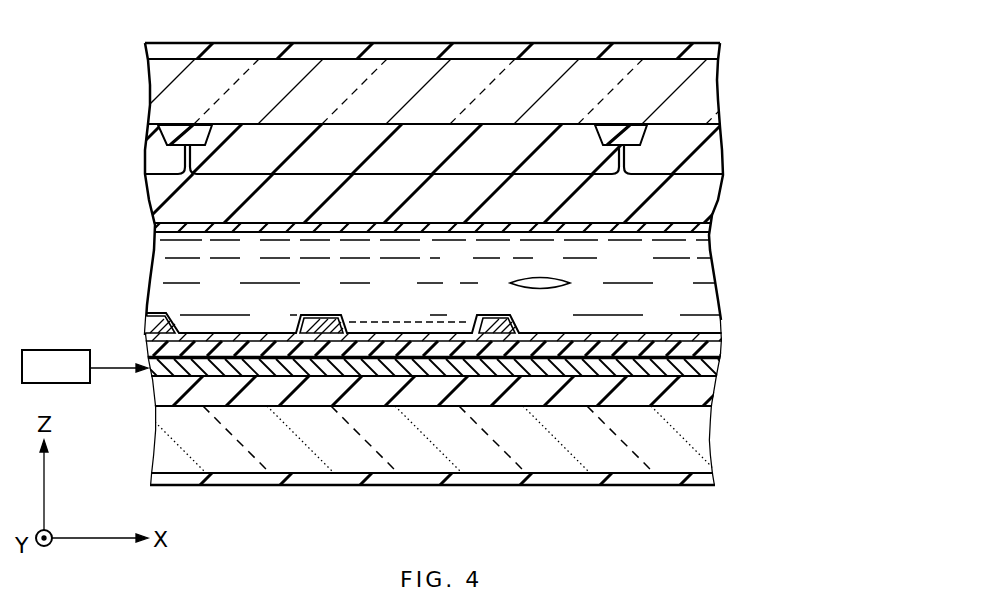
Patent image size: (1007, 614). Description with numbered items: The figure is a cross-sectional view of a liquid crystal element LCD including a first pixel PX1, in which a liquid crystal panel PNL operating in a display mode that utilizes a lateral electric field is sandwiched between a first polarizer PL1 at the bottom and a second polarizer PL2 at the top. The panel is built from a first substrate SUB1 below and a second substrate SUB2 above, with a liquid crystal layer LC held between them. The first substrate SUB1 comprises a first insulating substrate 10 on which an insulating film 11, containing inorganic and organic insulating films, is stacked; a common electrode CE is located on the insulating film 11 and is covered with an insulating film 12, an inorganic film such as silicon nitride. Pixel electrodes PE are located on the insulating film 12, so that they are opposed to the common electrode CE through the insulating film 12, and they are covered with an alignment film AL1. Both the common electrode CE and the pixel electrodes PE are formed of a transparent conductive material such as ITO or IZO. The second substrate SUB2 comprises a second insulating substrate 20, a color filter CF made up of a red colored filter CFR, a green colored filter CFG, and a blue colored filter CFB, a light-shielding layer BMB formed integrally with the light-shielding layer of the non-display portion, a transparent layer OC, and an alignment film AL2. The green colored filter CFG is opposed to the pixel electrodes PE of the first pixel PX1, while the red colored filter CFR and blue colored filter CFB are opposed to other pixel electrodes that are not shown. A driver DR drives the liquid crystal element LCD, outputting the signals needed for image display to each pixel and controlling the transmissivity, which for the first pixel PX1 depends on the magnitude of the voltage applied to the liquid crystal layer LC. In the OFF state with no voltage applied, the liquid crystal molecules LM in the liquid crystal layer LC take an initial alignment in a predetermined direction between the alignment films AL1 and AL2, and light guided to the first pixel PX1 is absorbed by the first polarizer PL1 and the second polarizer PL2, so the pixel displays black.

The liquid crystal element LCD is at (806, 58).
The liquid crystal panel PNL is at (138, 90).
The second substrate SUB2 is at (746, 157).
The first substrate SUB1 is at (734, 408).
The second polarizer PL2 is at (720, 50).
The first polarizer PL1 is at (715, 480).
The second insulating substrate 20 is at (703, 84).
The first insulating substrate 10 is at (705, 442).
The color filter CF is at (136, 160).
The red colored filter CFR is at (142, 148).
The green colored filter CFG is at (330, 145).
The blue colored filter CFB is at (720, 140).
The light-shielding layer BMB is at (178, 135).
The transparent layer OC is at (705, 200).
The alignment film AL2 is at (708, 226).
The alignment film AL1 is at (722, 332).
The liquid crystal layer LC is at (705, 273).
The liquid crystal molecules LM is at (567, 282).
The pixel electrodes PE is at (473, 316).
The first pixel PX1 is at (488, 260).
The insulating film 12 is at (716, 346).
The common electrode CE is at (712, 362).
The insulating film 11 is at (707, 390).
The driver DR is at (85, 366).